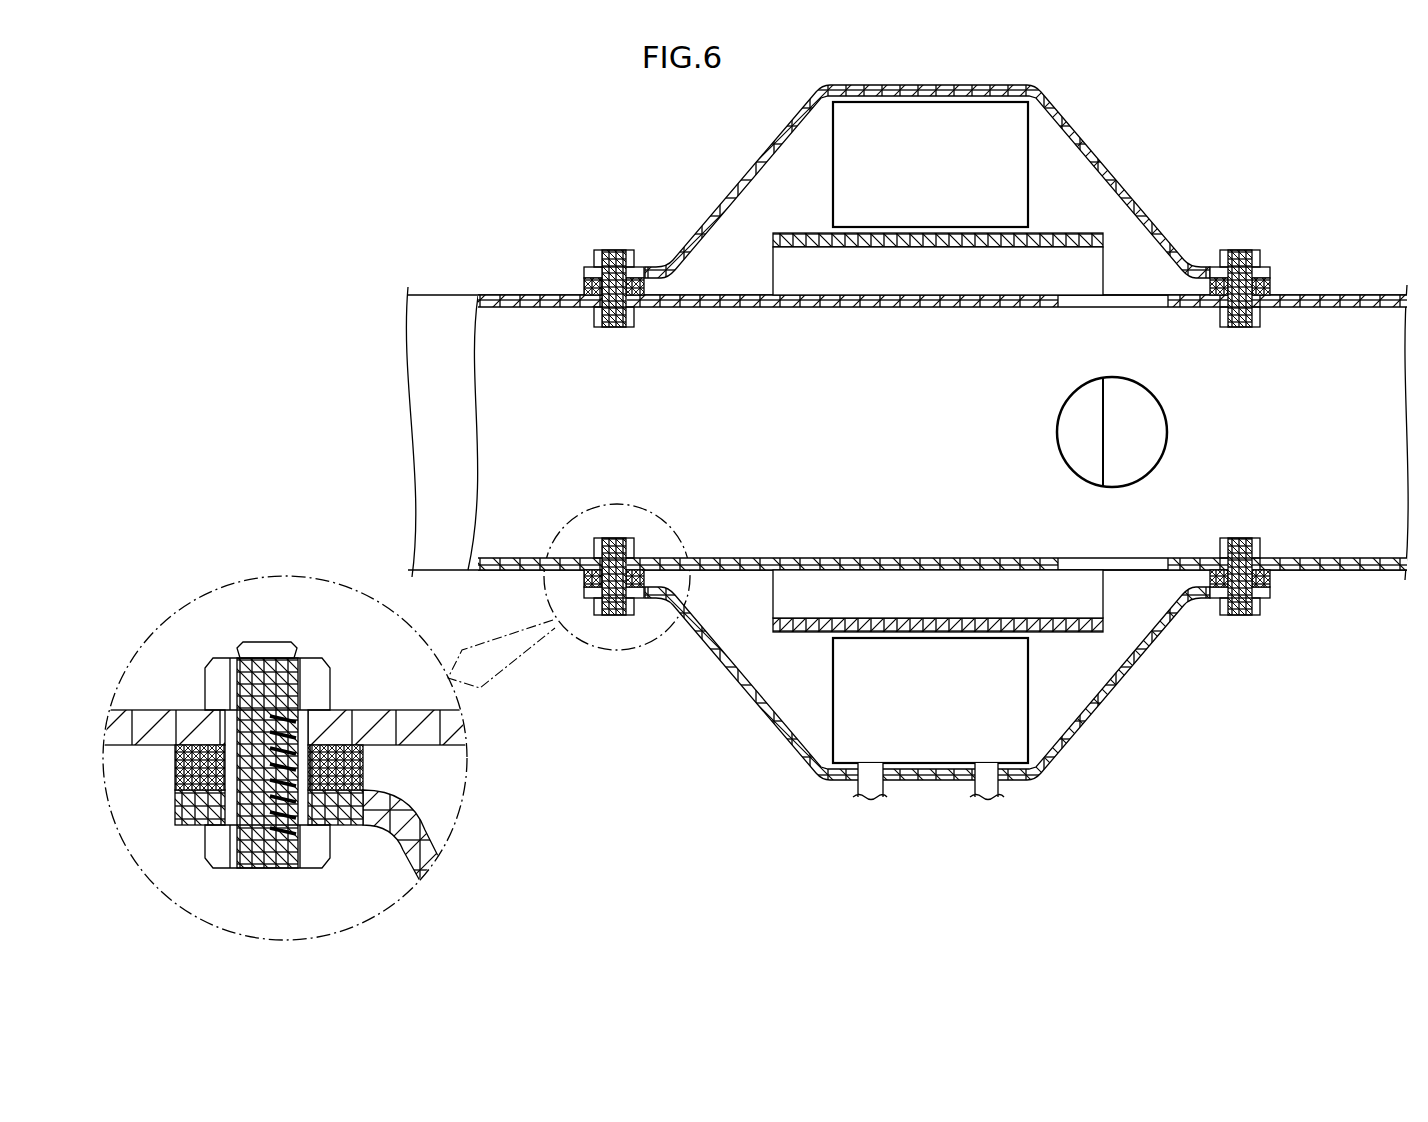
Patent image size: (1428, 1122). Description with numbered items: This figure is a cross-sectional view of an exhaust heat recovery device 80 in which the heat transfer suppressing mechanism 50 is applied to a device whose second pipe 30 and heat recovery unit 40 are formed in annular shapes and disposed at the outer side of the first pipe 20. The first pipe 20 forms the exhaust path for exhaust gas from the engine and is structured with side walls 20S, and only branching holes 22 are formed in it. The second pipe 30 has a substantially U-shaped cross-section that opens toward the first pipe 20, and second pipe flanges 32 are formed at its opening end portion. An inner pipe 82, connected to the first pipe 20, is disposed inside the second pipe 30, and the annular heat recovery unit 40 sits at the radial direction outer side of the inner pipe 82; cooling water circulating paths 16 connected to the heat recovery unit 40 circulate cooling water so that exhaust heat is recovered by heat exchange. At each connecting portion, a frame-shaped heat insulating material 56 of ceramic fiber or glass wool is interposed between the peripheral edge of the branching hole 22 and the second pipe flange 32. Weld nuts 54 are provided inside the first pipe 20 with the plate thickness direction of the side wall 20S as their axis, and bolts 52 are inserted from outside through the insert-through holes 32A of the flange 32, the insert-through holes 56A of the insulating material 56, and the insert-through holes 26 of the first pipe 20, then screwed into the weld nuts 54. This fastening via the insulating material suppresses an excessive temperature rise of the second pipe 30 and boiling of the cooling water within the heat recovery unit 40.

The cooling water circulating path 16 is at (860, 797).
The first pipe 20 is at (501, 284).
The side wall 20S is at (413, 398).
The branching hole 22 is at (1165, 307).
The insert-through hole 26 is at (292, 690).
The second pipe 30 is at (1092, 119).
The second pipe flange 32 is at (590, 270).
The insert-through hole 32A is at (305, 828).
The heat recovery unit 40 is at (832, 712).
The heat transfer suppressing mechanism 50 is at (607, 640).
The bolt 52 is at (616, 250).
The weld nut 54 is at (620, 327).
The heat insulating material 56 is at (650, 290).
The insert-through hole 56A is at (320, 740).
The exhaust heat recovery device 80 is at (1232, 144).
The inner pipe 82 is at (1080, 233).